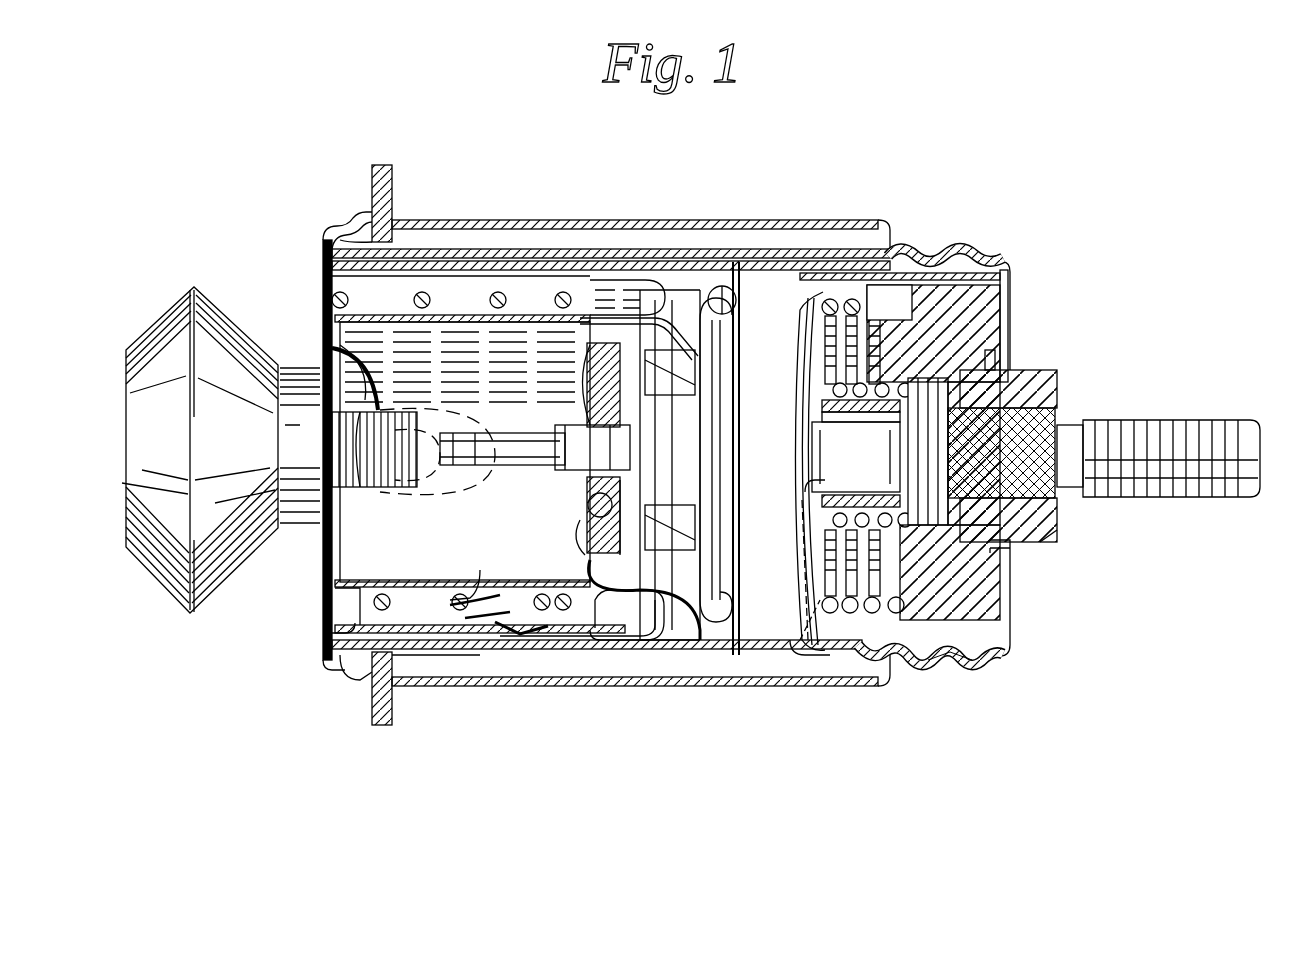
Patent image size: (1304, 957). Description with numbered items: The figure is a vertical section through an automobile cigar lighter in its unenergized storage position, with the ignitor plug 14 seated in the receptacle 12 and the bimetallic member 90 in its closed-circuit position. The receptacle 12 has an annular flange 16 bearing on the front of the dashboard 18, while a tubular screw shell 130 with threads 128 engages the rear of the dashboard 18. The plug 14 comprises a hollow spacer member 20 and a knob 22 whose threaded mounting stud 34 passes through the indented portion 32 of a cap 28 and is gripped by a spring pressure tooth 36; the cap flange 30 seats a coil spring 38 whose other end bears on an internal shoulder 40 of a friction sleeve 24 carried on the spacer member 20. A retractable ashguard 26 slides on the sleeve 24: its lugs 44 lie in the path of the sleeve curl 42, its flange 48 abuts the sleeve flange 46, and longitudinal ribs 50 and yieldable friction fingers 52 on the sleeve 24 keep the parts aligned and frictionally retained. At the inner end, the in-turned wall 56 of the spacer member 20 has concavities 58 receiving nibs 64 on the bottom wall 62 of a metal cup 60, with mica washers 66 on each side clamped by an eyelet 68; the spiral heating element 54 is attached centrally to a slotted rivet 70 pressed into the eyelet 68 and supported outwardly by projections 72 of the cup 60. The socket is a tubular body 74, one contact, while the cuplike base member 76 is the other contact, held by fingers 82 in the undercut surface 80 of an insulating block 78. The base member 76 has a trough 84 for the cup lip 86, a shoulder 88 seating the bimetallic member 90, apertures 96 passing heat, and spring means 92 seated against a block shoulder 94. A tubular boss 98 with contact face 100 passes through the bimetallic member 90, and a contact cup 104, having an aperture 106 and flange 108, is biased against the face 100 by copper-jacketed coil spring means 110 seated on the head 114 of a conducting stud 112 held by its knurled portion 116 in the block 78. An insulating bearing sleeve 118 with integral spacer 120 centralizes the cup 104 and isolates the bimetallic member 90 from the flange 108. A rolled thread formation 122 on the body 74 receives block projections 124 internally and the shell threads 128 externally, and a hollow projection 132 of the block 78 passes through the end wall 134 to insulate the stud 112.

The receptacle or holder device 12 is at (1016, 674).
The ignitor plug 14 is at (296, 616).
The annular flange 16 is at (348, 215).
The automobile dashboard 18 is at (392, 190).
The spacer member 20 is at (436, 582).
The knob 22 is at (130, 482).
The friction sleeve 24 is at (428, 625).
The retractable ashguard 26 is at (592, 650).
The cap 28 is at (322, 567).
The annular flange 30 is at (330, 640).
The central indented portion 32 is at (355, 490).
The threaded mounting stud 34 is at (380, 490).
The spring pressure tooth 36 is at (330, 347).
The coil spring 38 is at (475, 592).
The internal shoulder 40 is at (594, 280).
The annular curl 42 is at (662, 640).
The lugs 44 is at (522, 640).
The annular flange 46 is at (325, 665).
The flange 48 is at (348, 675).
The longitudinal ribs 50 is at (412, 657).
The friction fingers 52 is at (450, 498).
The spiral heating element 54 is at (690, 478).
The transverse wall 56 is at (585, 490).
The nib-receiving concavities 58 is at (578, 535).
The metal cup 60 is at (636, 590).
The bottom wall 62 is at (588, 510).
The nibs 64 is at (622, 530).
The insulating washers 66 is at (585, 370).
The eyelet 68 is at (592, 447).
The slotted rivet 70 is at (530, 466).
The projections 72 is at (700, 390).
The tubular body 74 is at (748, 687).
The metal base member 76 is at (798, 640).
The insulating block 78 is at (990, 325).
The undercut surface 80 is at (1005, 290).
The fingers 82 is at (1000, 262).
The annular contact trough 84 is at (800, 612).
The lip 86 is at (736, 603).
The internal shoulder 88 is at (815, 645).
The bimetallic member 90 is at (808, 548).
The spring means 92 is at (880, 298).
The shoulder 94 is at (900, 298).
The apertures 96 is at (800, 380).
The tubular boss 98 is at (805, 487).
The contact face 100 is at (885, 480).
The contact cup 104 is at (840, 490).
The central aperture 106 is at (983, 453).
The annular flange 108 is at (822, 404).
The coil spring means 110 is at (928, 451).
The conducting stud 112 is at (1111, 409).
The head 114 is at (1020, 375).
The knurled portion 116 is at (1057, 515).
The insulating bearing sleeve 118 is at (830, 418).
The spacer 120 is at (822, 503).
The rolled thread formation 122 is at (905, 663).
The projections 124 is at (948, 668).
The threads 128 is at (962, 250).
The tubular screw shell 130 is at (798, 218).
The hollow tubular projection 132 is at (1052, 540).
The transverse end wall 134 is at (1010, 600).